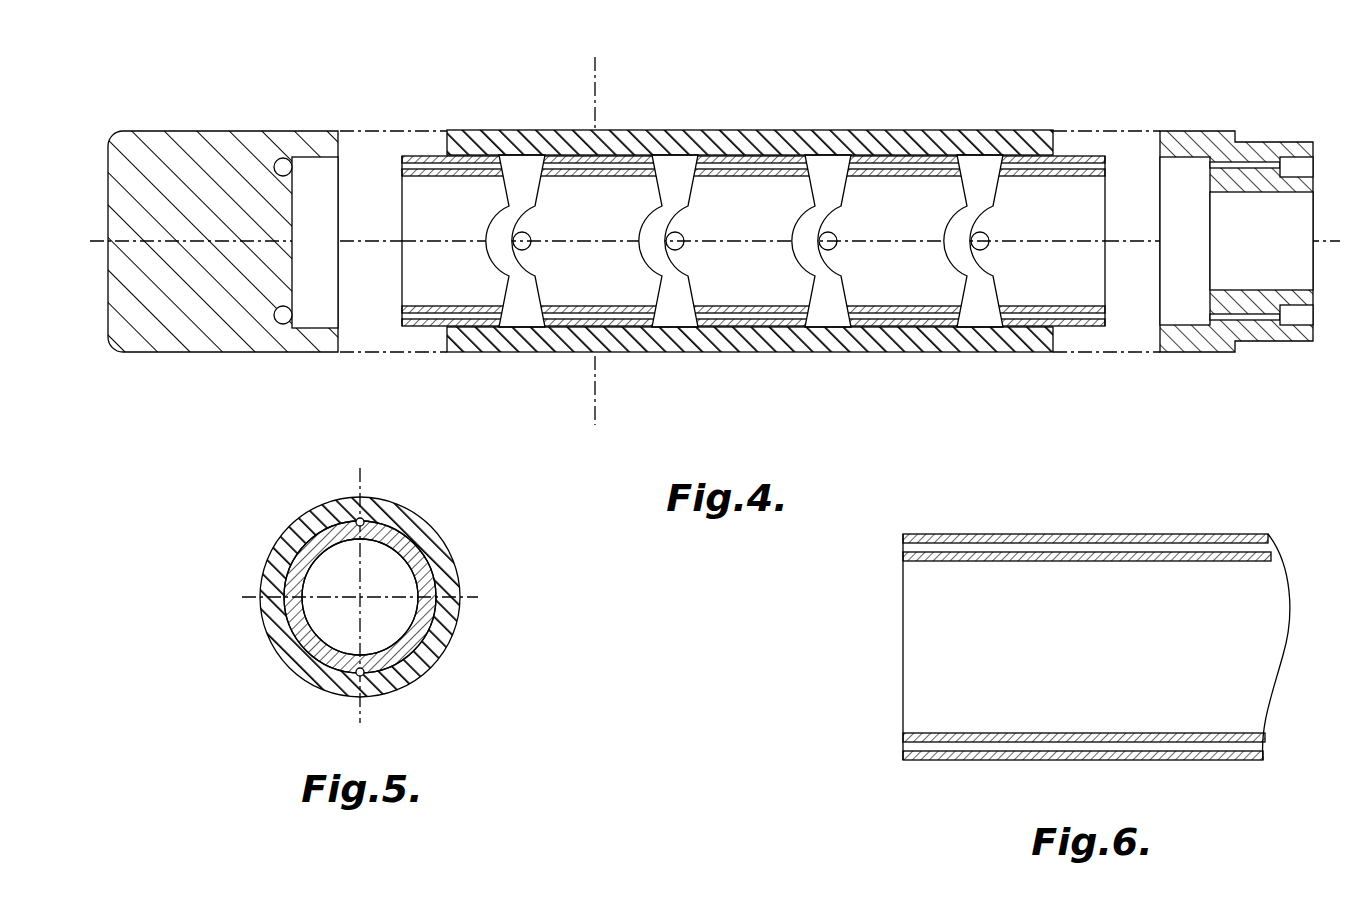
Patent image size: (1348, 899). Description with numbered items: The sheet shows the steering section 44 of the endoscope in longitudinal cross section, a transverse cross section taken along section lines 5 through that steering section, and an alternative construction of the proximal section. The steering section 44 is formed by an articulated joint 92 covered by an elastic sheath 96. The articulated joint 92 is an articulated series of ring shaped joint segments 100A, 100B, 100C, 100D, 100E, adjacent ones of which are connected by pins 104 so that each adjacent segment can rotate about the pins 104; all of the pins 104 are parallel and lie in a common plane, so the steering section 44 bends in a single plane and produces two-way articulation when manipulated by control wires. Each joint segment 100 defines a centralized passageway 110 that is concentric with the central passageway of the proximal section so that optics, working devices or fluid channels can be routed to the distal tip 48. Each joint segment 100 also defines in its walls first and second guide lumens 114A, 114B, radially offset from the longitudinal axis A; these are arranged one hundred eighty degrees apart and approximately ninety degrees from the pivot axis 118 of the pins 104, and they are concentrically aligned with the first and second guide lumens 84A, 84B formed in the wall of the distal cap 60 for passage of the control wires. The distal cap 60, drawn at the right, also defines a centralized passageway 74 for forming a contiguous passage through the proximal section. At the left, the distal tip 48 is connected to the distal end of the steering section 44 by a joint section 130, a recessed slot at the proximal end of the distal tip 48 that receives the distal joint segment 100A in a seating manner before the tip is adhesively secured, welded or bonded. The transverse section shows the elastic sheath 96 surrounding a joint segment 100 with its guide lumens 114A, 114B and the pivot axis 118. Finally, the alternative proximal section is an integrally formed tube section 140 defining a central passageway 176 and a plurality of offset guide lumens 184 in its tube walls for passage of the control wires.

In FIG. 4, the steering section 44 is at (810, 60).
In FIG. 5, the steering section 44 is at (347, 597).
In FIG. 4, the distal tip 48 is at (247, 206).
In FIG. 4, the articulated joint 92 is at (737, 241).
In FIG. 4, the elastic sheath 96 is at (662, 130).
In FIG. 5, the elastic sheath 96 is at (320, 698).
In FIG. 5, the joint segment 100 is at (420, 520).
In FIG. 4, the distal joint segment 100A is at (400, 288).
In FIG. 4, the joint segment 100B is at (540, 290).
In FIG. 4, the joint segment 100C is at (692, 290).
In FIG. 4, the joint segment 100D is at (842, 285).
In FIG. 4, the joint segment 100E is at (990, 285).
In FIG. 4, the pins 104 is at (527, 237).
In FIG. 4, the centralized passageway 110 is at (430, 300).
In FIG. 4, the first guide lumen 114A is at (438, 158).
In FIG. 5, the first guide lumen 114A is at (355, 520).
In FIG. 4, the second guide lumen 114B is at (423, 297).
In FIG. 5, the second guide lumen 114B is at (390, 672).
In FIG. 5, the pivot axis 118 is at (465, 597).
In FIG. 4, the joint section 130 is at (325, 208).
In FIG. 4, the distal cap 60 is at (1236, 220).
In FIG. 4, the centralized passageway 74 is at (1248, 229).
In FIG. 4, the first guide lumen 84A is at (1245, 165).
In FIG. 4, the second guide lumen 84B is at (1252, 318).
In FIG. 6, the integrally formed tube section 140 is at (1096, 651).
In FIG. 6, the central passageway 176 is at (1072, 663).
In FIG. 6, the offset guide lumens 184 is at (965, 545).
In FIG. 4, the section lines 5- 5 is at (549, 80).
In FIG. 4, the longitudinal axis A is at (1328, 241).